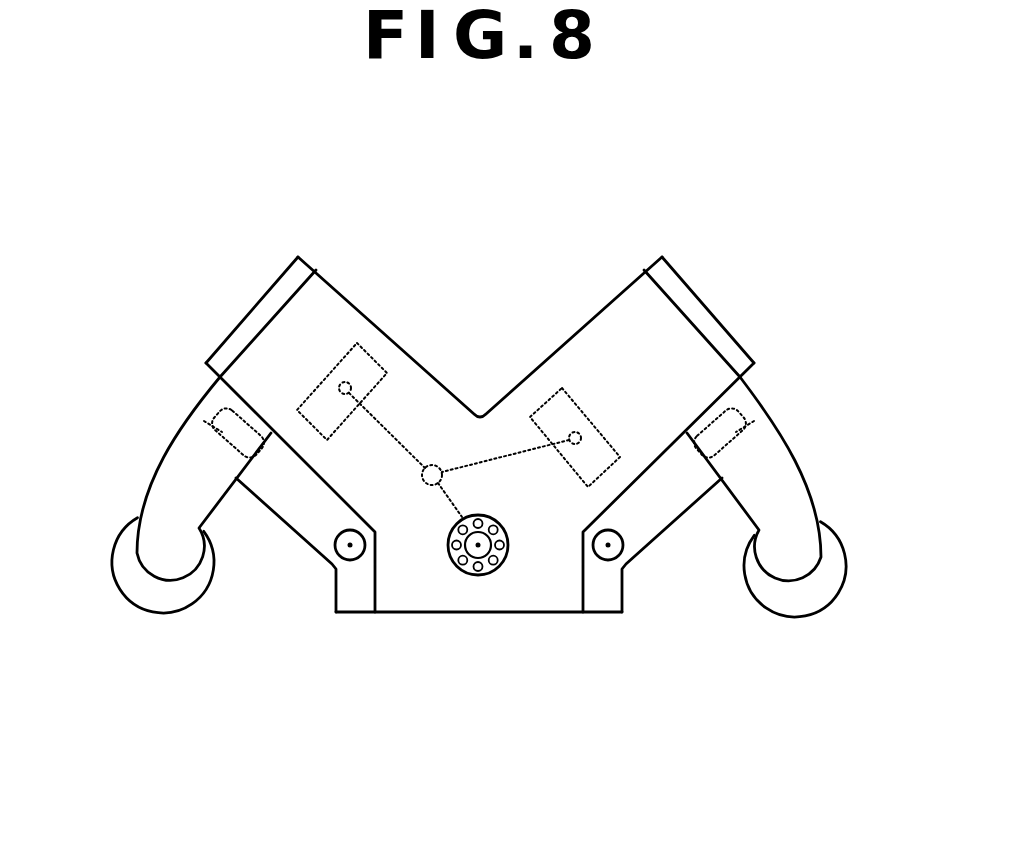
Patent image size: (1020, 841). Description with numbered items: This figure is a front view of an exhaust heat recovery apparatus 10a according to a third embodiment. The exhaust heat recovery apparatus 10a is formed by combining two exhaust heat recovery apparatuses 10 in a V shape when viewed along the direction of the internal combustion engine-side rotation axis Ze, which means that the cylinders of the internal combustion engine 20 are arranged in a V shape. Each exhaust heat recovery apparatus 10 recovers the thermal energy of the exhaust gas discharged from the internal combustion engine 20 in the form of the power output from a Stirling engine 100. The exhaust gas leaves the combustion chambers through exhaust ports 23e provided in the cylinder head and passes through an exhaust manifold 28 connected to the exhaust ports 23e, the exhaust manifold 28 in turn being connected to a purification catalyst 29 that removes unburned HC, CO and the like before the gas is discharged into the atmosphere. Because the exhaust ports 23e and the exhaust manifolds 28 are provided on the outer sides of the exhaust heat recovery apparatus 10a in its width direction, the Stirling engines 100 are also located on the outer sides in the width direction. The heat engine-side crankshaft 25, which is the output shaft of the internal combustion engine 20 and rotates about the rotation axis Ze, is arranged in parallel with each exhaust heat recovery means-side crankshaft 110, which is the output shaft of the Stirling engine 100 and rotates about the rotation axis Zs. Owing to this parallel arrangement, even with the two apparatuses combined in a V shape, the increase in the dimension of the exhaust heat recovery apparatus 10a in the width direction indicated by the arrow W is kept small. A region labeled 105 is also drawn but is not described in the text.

The exhaust heat recovery apparatus 10a is at (182, 150).
The exhaust heat recovery apparatus 10 is at (350, 267).
The exhaust port 23e is at (256, 392).
The internal combustion engine 20 is at (384, 332).
The pad 105 is at (210, 423).
The exhaust manifold 28 is at (172, 485).
The purification catalyst 29 is at (120, 562).
The Stirling engine 100 is at (288, 508).
The exhaust heat recovery means-side crankshaft 110 is at (361, 558).
The heat engine-side crankshaft 25 is at (467, 563).
The rotation axis Zs is at (349, 546).
The rotation axis Ze is at (478, 545).
The width direction arrow W is at (533, 777).